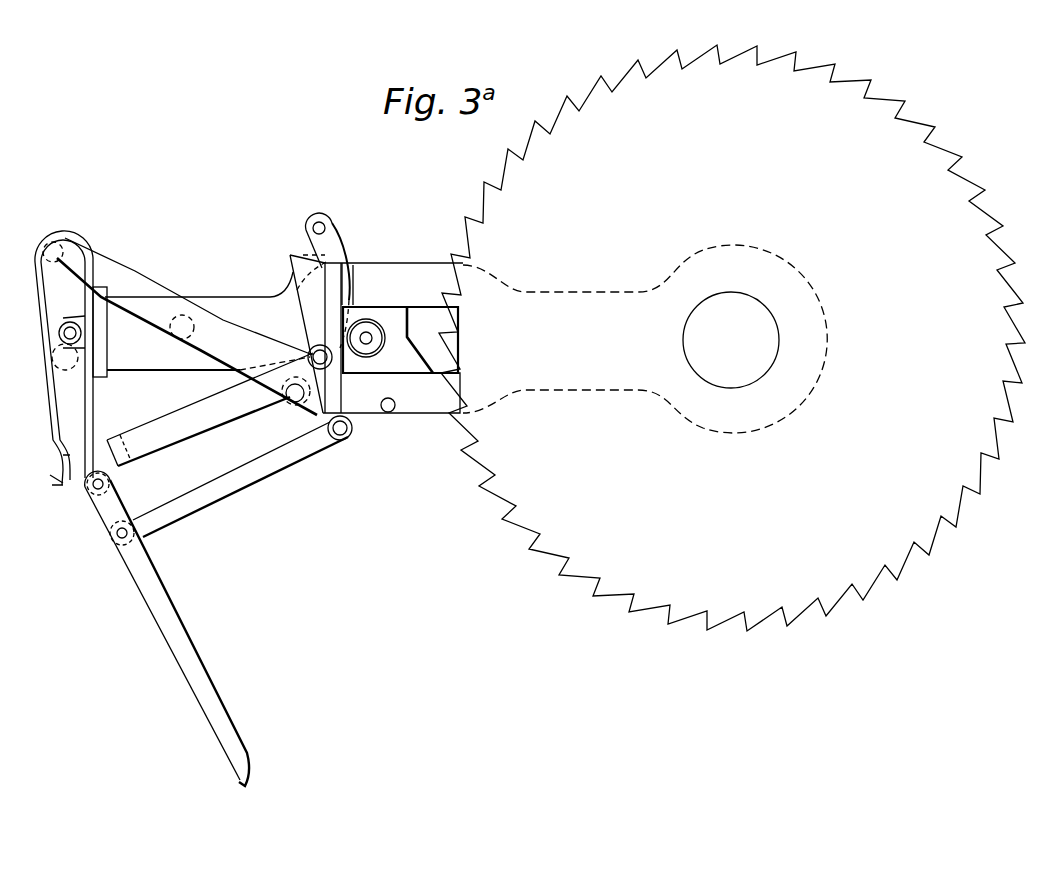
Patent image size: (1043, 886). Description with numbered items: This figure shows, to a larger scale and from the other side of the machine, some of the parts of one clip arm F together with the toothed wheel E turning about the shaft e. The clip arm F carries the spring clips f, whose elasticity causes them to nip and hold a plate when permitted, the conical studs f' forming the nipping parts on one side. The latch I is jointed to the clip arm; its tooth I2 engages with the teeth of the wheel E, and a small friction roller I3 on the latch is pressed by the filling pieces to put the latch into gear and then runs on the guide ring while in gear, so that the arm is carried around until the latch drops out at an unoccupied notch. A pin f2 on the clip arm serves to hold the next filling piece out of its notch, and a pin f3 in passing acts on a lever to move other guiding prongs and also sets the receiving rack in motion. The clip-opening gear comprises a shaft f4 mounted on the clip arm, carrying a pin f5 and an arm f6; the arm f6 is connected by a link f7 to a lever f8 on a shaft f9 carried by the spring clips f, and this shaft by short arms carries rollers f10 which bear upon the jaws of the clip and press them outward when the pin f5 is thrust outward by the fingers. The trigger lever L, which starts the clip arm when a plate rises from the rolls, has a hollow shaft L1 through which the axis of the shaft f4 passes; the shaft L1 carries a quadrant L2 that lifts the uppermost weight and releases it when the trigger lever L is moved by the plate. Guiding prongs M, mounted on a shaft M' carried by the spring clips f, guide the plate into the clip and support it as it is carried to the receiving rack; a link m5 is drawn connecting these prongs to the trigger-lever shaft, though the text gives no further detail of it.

The wheel E is at (732, 338).
The shaft e is at (731, 340).
The clip arm F is at (405, 266).
The latch I is at (390, 322).
The tooth I2 is at (423, 377).
The friction roller I3 is at (376, 349).
The trigger lever L is at (182, 425).
The shaft of the trigger lever L1 is at (349, 436).
The quadrant L2 is at (290, 256).
The guiding prongs M is at (167, 628).
The shaft M' is at (82, 499).
The connecting link m5 is at (229, 482).
The clips f is at (168, 358).
The conical studs f' is at (47, 468).
The pin f2 is at (388, 413).
The pin f3 is at (183, 339).
The shaft f4 is at (310, 354).
The pin f5 is at (327, 230).
The arm f6 is at (294, 404).
The link f7 is at (124, 283).
The lever f8 is at (48, 282).
The shaft f9 is at (62, 335).
The rollers f10 is at (64, 370).